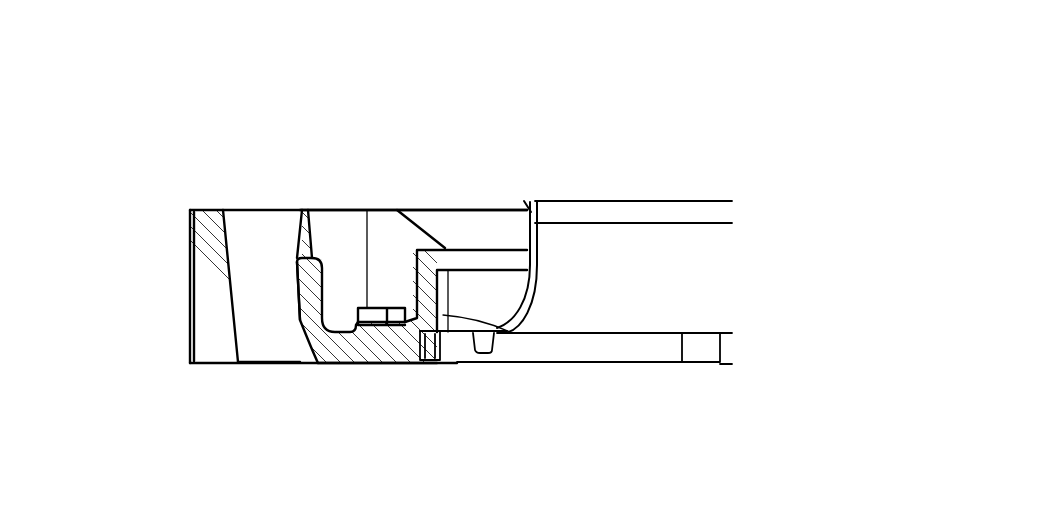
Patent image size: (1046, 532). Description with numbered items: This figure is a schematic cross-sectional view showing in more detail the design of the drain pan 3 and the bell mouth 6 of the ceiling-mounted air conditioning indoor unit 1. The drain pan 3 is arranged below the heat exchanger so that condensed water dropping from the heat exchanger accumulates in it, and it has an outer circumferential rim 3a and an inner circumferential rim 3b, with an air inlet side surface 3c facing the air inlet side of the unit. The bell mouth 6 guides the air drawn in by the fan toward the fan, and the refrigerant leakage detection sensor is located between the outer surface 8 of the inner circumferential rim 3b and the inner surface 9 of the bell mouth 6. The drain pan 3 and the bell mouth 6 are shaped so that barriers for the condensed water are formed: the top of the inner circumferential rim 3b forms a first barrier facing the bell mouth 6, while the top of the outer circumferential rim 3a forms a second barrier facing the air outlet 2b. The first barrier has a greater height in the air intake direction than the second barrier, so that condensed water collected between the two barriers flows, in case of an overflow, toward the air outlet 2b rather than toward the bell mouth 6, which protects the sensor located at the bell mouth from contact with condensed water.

The ceiling-mounted air conditioning indoor unit 1 is at (183, 62).
The air outlet 2b is at (283, 350).
The drain pan 3 is at (253, 333).
The outer circumferential rim 3a is at (300, 300).
The inner circumferential rim 3b is at (445, 285).
The air inlet side surface 3c is at (372, 366).
The bell mouth 6 is at (650, 298).
The outer surface 8 is at (497, 328).
The inner surface 9 is at (523, 231).